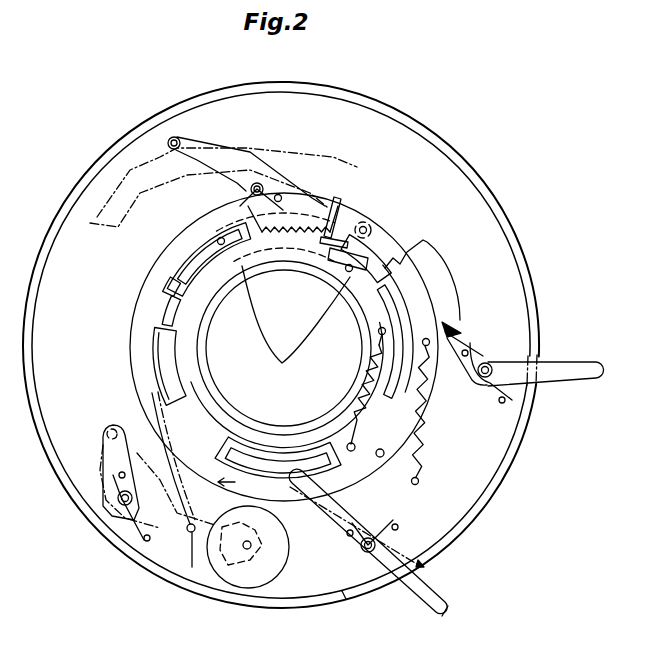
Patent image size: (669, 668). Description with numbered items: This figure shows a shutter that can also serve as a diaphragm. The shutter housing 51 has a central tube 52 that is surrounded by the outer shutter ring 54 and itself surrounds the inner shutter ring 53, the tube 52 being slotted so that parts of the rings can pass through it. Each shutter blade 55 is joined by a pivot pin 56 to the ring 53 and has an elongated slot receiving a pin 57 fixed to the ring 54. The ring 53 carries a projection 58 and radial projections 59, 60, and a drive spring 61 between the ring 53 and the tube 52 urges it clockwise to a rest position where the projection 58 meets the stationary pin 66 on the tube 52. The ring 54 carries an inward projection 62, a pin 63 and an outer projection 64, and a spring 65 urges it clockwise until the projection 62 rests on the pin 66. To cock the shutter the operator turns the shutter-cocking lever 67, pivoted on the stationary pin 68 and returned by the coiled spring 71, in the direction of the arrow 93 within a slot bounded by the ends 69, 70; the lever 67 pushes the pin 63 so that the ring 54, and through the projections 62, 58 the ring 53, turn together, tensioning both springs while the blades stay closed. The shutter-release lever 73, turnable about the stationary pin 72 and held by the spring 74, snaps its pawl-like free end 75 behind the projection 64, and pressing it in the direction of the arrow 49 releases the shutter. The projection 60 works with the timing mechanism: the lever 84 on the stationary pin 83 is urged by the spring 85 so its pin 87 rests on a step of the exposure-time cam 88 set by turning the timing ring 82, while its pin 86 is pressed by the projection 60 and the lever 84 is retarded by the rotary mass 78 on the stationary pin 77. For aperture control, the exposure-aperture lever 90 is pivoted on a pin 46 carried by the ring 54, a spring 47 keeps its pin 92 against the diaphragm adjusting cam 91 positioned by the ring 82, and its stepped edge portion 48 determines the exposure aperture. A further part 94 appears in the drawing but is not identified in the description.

The pin 46 is at (258, 183).
The spring 47 is at (283, 205).
The stepped edge portion 48 is at (334, 222).
The arrow 49 is at (563, 376).
The shutter housing 51 is at (509, 233).
The central tube 52 is at (396, 258).
The shutter ring 53 is at (327, 430).
The shutter ring 54 is at (352, 480).
The shutter blade 55 is at (293, 345).
The pivot pin 56 is at (347, 272).
The pin 57 is at (366, 228).
The projection 58 is at (170, 313).
The radially extending projection 59 is at (334, 228).
The radially extending projection 60 is at (132, 475).
The drive spring 61 is at (367, 373).
The inwardly directed radial projection 62 is at (172, 290).
The pin 63 is at (383, 458).
The outer projection 64 is at (449, 327).
The spring 65 is at (428, 447).
The stationary pin 66 is at (217, 242).
The shutter-cocking lever 67 is at (434, 596).
The stationary pin 68 is at (368, 553).
The slot end 69 is at (424, 563).
The slot end 70 is at (345, 598).
The spring 71 is at (398, 530).
The stationary pin 72 is at (488, 367).
The shutter-release lever 73 is at (585, 378).
The spring 74 is at (499, 404).
The free end 75 is at (450, 333).
The stationary pin 77 is at (252, 552).
The rotary mass 78 is at (273, 572).
The timing ring 82 is at (184, 510).
The stationary pin 83 is at (121, 495).
The lever 84 is at (131, 505).
The spring 85 is at (140, 528).
The pin 86 is at (106, 434).
The pin 87 is at (192, 568).
The exposure-time determining cam 88 is at (212, 577).
The exposure-aperture controlling lever 90 is at (327, 203).
The diaphragm adjusting cam 91 is at (247, 148).
The pin 92 is at (174, 137).
The arrow 93 is at (446, 610).
The lever tip 94 is at (274, 488).